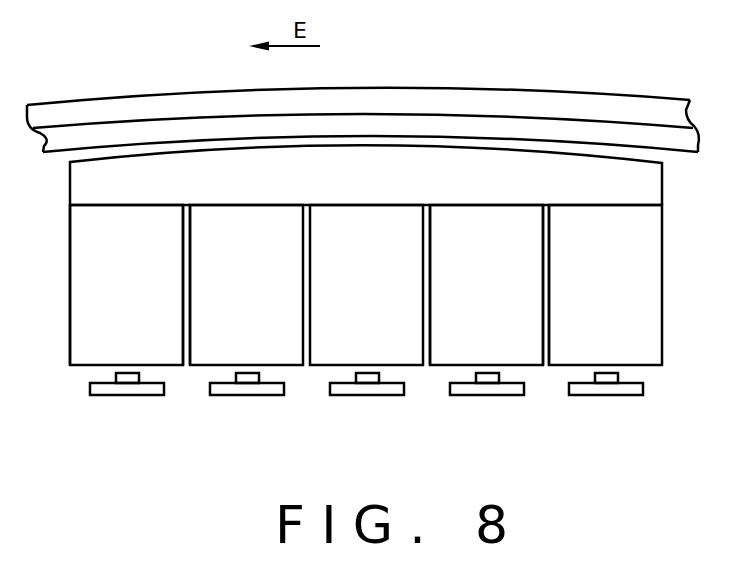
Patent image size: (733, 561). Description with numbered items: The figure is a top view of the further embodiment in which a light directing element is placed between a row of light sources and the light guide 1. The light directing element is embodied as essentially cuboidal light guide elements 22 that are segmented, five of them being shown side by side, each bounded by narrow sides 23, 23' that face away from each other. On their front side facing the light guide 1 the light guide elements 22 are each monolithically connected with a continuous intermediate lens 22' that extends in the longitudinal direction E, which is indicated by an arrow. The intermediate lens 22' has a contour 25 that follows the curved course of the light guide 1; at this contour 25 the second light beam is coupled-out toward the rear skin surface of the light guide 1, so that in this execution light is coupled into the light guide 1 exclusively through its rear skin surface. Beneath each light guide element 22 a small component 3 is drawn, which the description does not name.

The light guide 1 is at (475, 104).
The contour 25 is at (570, 151).
The intermediate lens 22' is at (366, 175).
The light guide element 22 is at (366, 285).
The narrow side 23 is at (225, 327).
The narrow side 23' is at (366, 327).
The sensors 3 is at (130, 383).